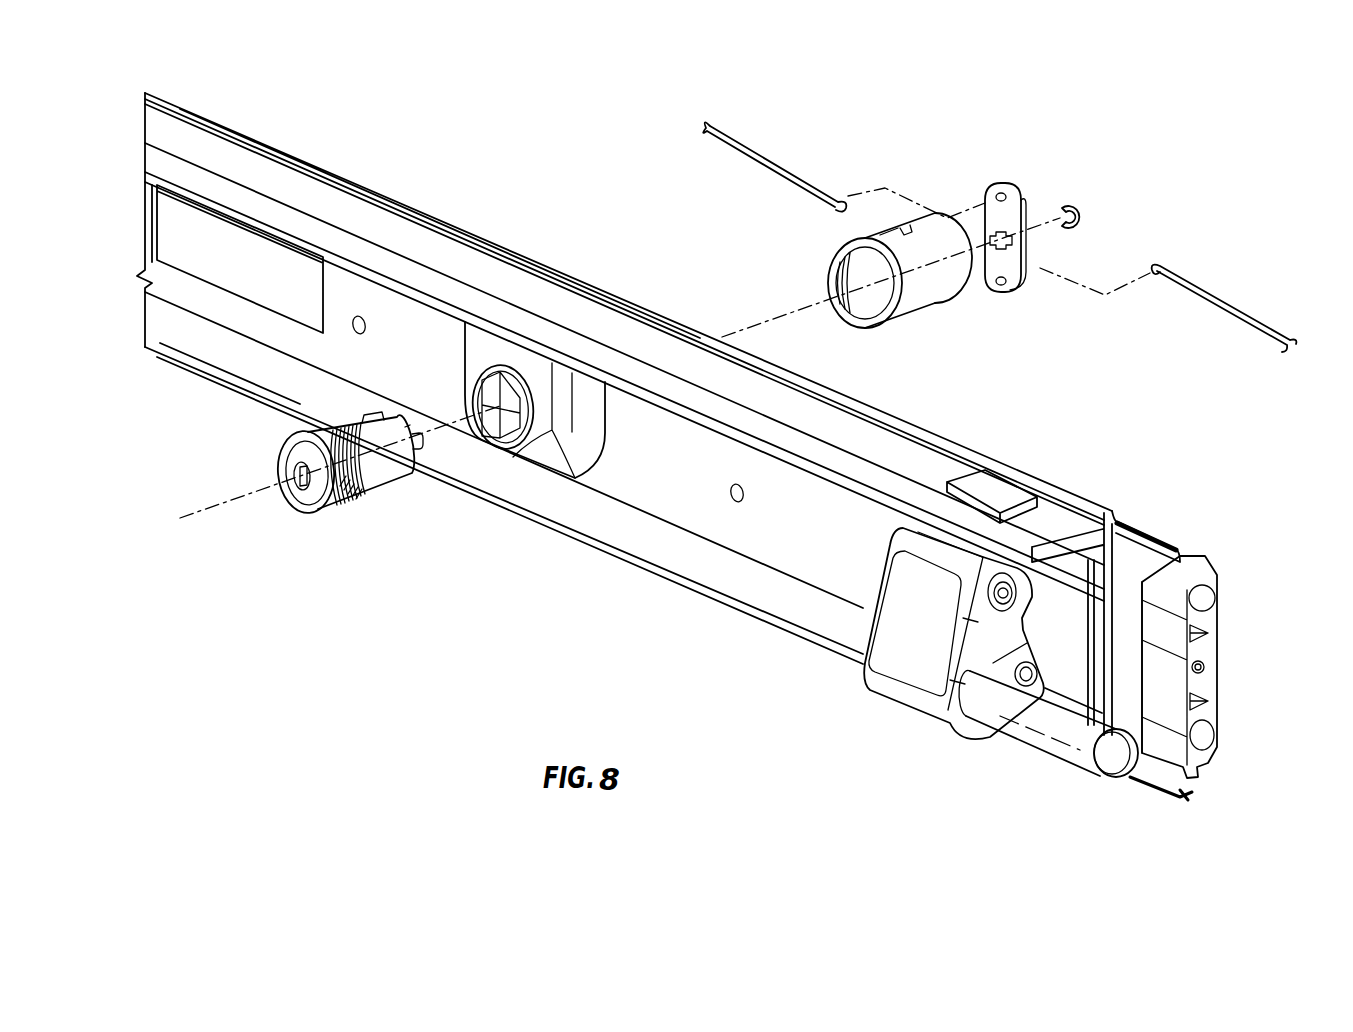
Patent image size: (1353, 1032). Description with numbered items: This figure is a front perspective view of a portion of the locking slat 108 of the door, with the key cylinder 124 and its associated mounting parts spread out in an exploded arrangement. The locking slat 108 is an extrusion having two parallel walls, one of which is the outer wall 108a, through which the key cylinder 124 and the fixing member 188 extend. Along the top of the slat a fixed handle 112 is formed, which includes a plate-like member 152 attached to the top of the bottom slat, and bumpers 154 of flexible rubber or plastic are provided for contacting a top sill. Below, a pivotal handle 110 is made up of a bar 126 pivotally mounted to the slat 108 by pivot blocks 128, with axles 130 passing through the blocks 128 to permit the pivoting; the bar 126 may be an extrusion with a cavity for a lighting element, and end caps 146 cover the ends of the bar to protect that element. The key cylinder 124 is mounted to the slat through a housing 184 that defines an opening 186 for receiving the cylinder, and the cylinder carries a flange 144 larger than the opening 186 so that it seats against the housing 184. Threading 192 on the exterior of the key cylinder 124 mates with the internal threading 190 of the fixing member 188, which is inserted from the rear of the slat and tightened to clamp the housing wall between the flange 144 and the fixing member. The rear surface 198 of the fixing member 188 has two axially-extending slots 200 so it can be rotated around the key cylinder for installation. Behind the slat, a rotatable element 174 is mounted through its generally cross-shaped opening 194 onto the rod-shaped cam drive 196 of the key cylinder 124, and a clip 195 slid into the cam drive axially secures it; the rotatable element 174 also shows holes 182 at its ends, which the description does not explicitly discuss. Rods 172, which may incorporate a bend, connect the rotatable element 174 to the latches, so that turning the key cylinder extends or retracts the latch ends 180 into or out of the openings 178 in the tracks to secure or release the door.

The locking slat 108 is at (788, 548).
The wall 108a is at (613, 447).
The handle 110 is at (636, 588).
The fixed handle 112 is at (322, 200).
The key cylinder 124 is at (317, 474).
The bar 126 is at (800, 633).
The pivot blocks 128 is at (970, 660).
The axles 130 is at (1017, 593).
The flange 144 is at (318, 512).
The end caps 146 is at (1115, 763).
The plate-like member 152 is at (417, 240).
The bumpers 154 is at (1003, 487).
The rod 172 is at (762, 160).
The rotatable element 174 is at (1026, 243).
The openings in tracks 178 is at (1168, 655).
The ends of latches 180 is at (1204, 668).
The plate hole 182 is at (996, 197).
The housing 184 is at (572, 470).
The opening 186 is at (508, 445).
The fixing member 188 is at (885, 237).
The internal threading 190 is at (891, 235).
The threading 192 is at (330, 430).
The opening 194 is at (1013, 240).
The clip 195 is at (1067, 204).
The cam drive 196 is at (413, 430).
The rear surface 198 is at (937, 290).
The axially-extending slots 200 is at (910, 233).